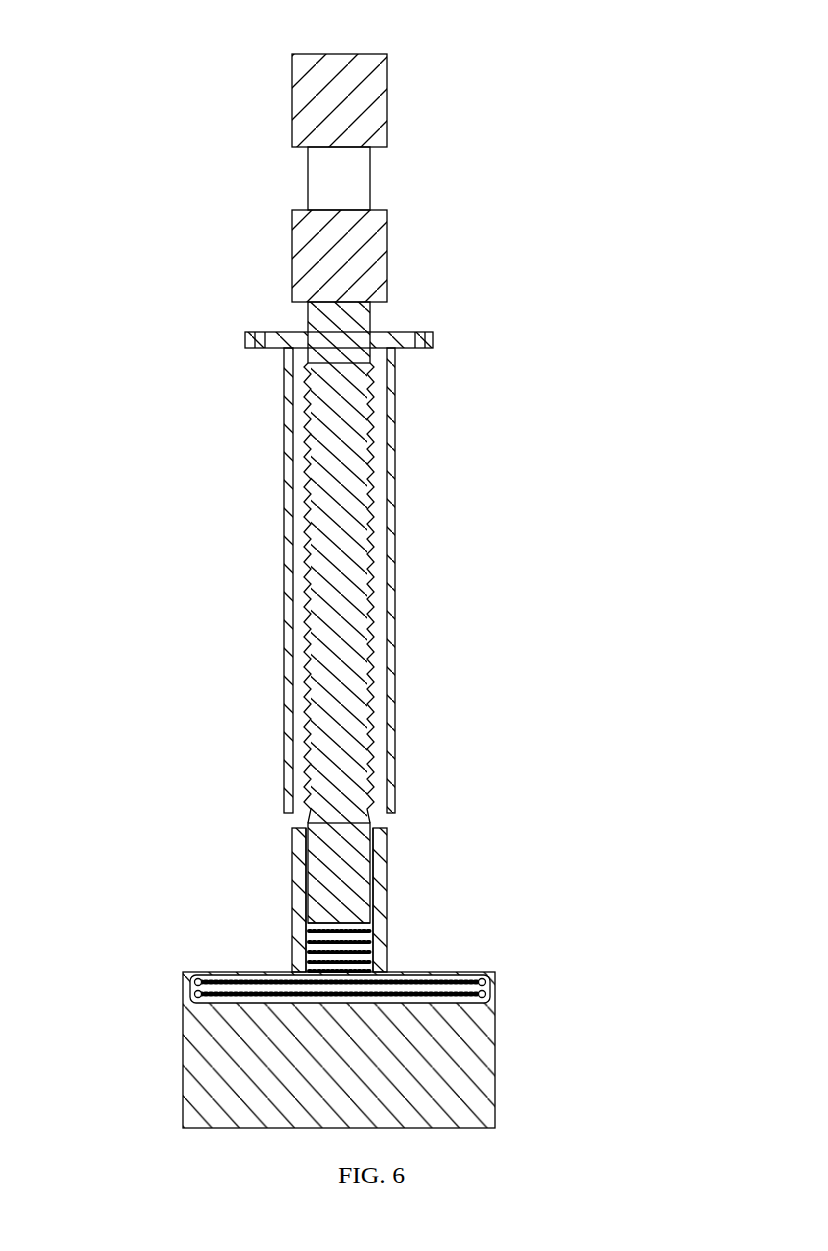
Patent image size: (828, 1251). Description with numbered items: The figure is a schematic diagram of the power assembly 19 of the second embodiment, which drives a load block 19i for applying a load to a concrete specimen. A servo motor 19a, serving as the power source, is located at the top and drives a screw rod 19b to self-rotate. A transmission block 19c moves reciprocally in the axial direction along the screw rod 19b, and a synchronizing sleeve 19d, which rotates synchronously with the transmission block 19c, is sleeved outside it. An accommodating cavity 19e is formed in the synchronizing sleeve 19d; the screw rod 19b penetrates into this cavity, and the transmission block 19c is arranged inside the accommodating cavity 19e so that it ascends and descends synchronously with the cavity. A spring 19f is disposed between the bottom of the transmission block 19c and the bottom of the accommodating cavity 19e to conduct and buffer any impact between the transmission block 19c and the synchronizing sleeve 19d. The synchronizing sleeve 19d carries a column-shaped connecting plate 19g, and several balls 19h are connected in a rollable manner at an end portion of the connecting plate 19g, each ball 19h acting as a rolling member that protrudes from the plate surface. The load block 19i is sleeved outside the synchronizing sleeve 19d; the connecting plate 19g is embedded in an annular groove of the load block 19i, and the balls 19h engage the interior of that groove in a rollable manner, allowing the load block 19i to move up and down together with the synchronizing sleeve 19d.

The power assembly 19 is at (520, 55).
The servo motor 19a is at (387, 122).
The screw rod 19b is at (355, 461).
The transmission block 19c is at (386, 850).
The synchronizing sleeve 19d is at (391, 921).
The accommodating cavity 19e is at (303, 957).
The spring 19f is at (306, 927).
The connecting plate 19g is at (195, 982).
The ball 19h is at (481, 978).
The load block 19i is at (455, 1108).